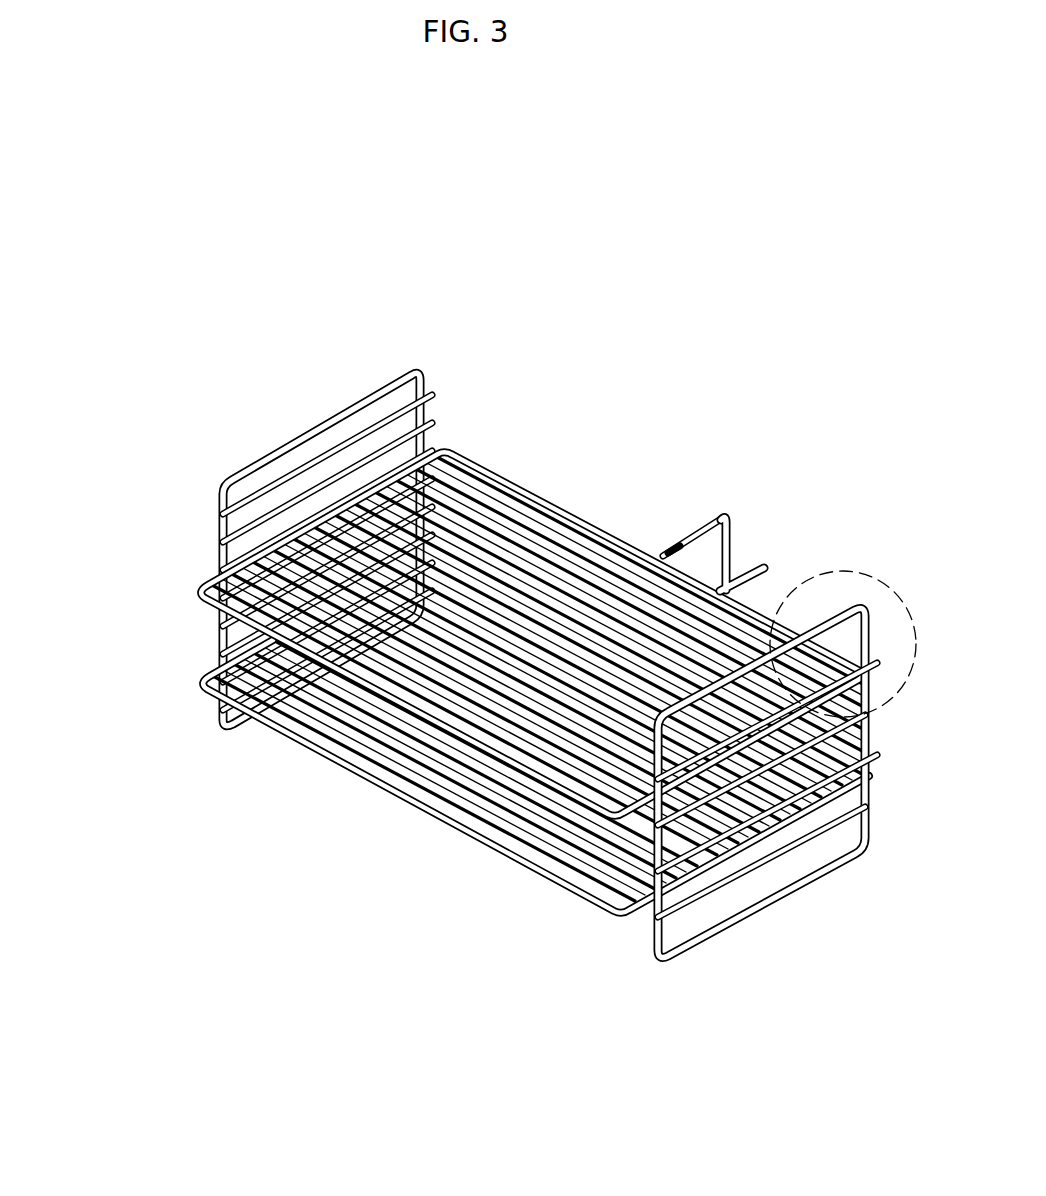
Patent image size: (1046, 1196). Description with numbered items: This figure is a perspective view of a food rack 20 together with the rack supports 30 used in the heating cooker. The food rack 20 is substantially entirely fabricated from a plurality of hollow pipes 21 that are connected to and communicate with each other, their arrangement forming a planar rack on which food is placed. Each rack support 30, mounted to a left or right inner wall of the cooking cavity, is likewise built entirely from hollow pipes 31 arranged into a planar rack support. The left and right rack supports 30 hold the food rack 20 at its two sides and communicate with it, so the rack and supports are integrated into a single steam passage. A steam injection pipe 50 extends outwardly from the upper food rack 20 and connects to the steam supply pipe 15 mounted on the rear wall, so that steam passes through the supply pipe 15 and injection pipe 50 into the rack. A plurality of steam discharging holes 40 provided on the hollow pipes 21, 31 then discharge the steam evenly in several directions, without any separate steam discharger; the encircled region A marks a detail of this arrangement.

The steam supply pipe 15 is at (715, 507).
The food rack 20 is at (170, 584).
The hollow pipes 21 is at (343, 752).
The rack support 30 is at (196, 484).
The hollow pipes 31 is at (292, 433).
The steam discharging holes 40 is at (293, 706).
The steam injection pipe 50 is at (657, 537).
The detail region A is at (883, 573).